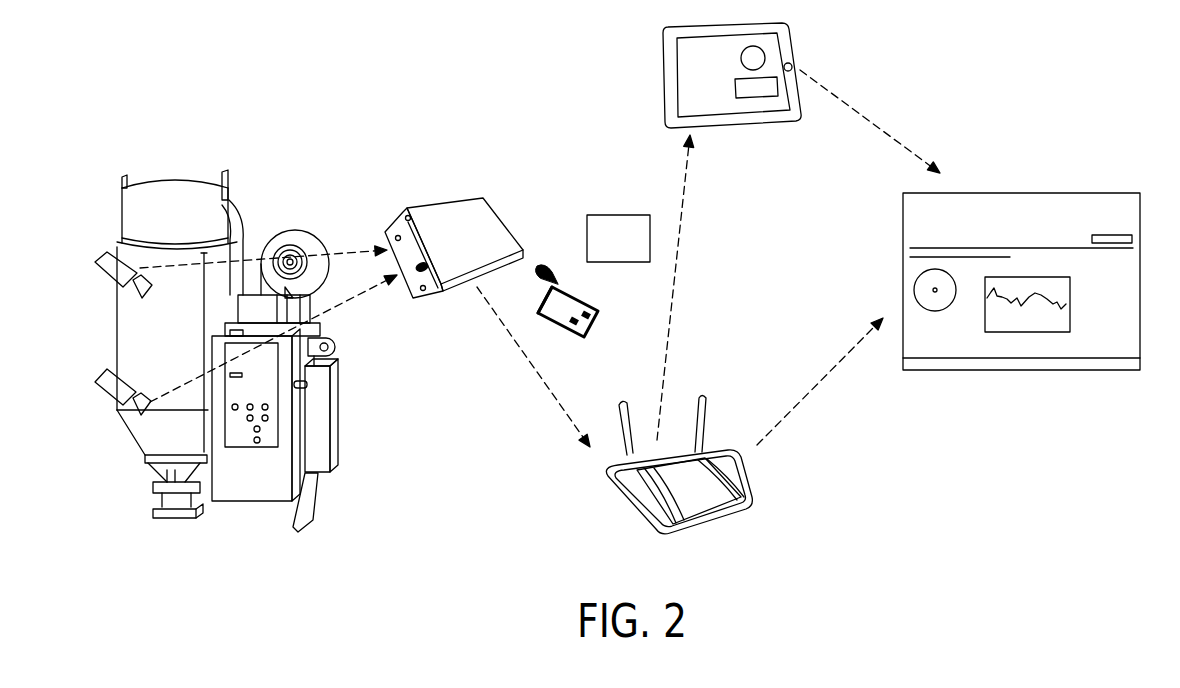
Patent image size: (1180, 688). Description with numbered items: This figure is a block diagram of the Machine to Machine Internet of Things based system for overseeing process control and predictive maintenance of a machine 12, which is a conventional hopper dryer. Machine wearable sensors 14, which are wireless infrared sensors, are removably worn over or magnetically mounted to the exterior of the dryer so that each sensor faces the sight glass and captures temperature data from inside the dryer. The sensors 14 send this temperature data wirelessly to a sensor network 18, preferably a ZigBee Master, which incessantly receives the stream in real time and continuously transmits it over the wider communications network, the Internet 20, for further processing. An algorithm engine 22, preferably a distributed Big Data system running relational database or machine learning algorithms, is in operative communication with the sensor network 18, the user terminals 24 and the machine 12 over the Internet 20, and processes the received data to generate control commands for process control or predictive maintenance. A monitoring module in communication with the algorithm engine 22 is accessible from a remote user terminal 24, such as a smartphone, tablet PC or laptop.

The machine 12 is at (188, 200).
The machine wearable sensors 14 is at (115, 270).
The sensor network 18 is at (485, 229).
The Internet 20 is at (737, 478).
The algorithm engine 22 is at (1037, 205).
The user terminal 24 is at (772, 45).